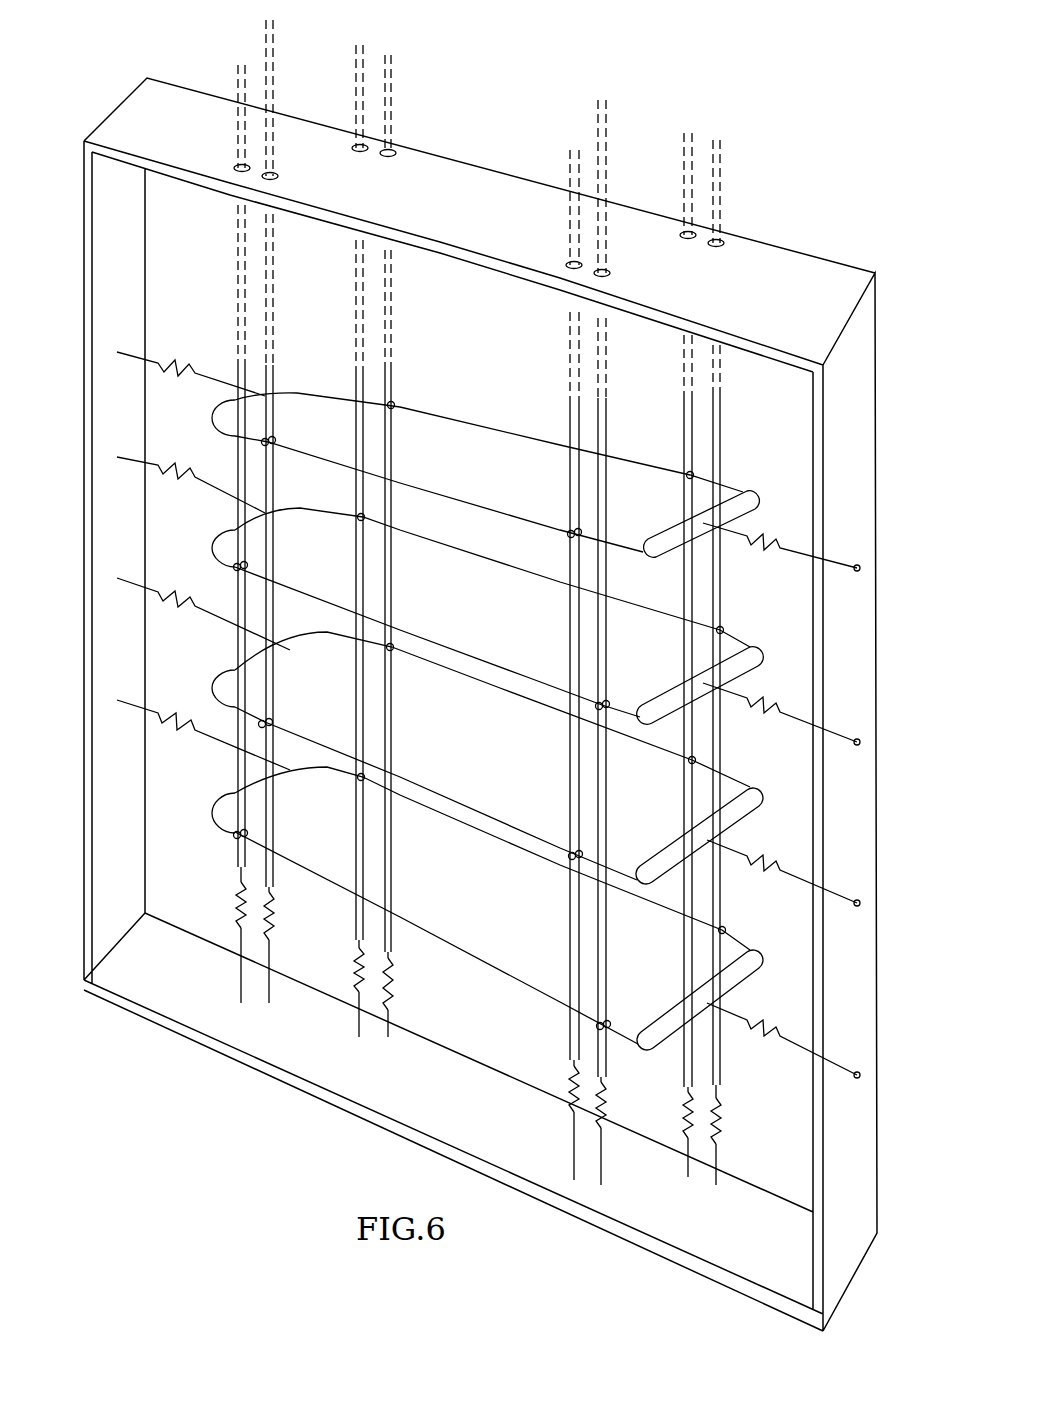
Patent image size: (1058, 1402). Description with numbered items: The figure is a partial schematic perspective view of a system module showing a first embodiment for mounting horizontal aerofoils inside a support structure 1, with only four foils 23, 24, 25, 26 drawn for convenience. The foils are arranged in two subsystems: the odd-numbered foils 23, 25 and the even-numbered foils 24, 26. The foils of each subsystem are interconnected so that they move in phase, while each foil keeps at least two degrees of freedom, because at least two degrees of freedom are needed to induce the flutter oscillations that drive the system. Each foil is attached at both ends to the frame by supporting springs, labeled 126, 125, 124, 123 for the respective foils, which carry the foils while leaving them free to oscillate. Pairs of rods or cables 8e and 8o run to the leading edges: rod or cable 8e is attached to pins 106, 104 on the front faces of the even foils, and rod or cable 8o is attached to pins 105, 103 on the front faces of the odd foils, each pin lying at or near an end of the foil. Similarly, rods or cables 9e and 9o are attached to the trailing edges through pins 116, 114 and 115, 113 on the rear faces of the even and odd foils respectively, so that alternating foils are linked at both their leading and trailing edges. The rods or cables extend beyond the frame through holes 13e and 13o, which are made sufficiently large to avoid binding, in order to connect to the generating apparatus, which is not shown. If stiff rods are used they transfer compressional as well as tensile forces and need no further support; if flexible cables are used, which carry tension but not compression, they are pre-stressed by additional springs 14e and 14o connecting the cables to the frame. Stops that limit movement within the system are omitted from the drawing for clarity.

The support structure 1 is at (860, 409).
The rod or cable at odd leading foil edges 8o is at (419, 573).
The rod or cable at even leading foil edges 8e is at (422, 543).
The rod or cable at odd trailing foil edges 9o is at (538, 571).
The rod or cable at even trailing foil edges 9e is at (538, 573).
The hole for odd rod or cable 13o is at (481, 179).
The hole for even rod or cable 13e is at (479, 183).
The pre-stressing spring for odd cables 14o is at (228, 905).
The pre-stressing spring for even cables 14e is at (278, 918).
The aerofoil 26 is at (485, 475).
The aerofoil 25 is at (487, 616).
The aerofoil 24 is at (487, 758).
The aerofoil 23 is at (487, 908).
The pin on front face of foil 106 is at (297, 436).
The pin on front face of foil 105 is at (237, 571).
The pin on front face of foil 104 is at (569, 851).
The pin on front face of foil 103 is at (625, 1008).
The pin on rear face of foil 116 is at (541, 428).
The pin on rear face of foil 115 is at (542, 559).
The pin on rear face of foil 114 is at (541, 697).
The pin on rear face of foil 113 is at (550, 854).
The supporting spring 126 is at (170, 381).
The supporting spring 125 is at (170, 484).
The supporting spring 124 is at (170, 613).
The supporting spring 123 is at (170, 737).